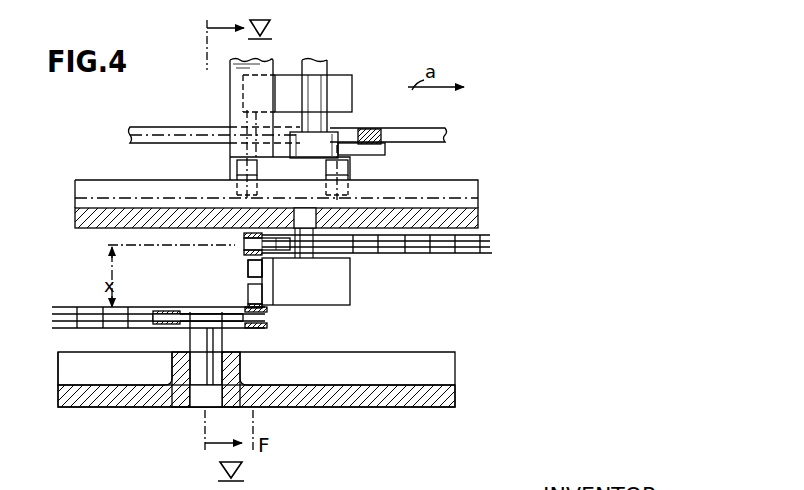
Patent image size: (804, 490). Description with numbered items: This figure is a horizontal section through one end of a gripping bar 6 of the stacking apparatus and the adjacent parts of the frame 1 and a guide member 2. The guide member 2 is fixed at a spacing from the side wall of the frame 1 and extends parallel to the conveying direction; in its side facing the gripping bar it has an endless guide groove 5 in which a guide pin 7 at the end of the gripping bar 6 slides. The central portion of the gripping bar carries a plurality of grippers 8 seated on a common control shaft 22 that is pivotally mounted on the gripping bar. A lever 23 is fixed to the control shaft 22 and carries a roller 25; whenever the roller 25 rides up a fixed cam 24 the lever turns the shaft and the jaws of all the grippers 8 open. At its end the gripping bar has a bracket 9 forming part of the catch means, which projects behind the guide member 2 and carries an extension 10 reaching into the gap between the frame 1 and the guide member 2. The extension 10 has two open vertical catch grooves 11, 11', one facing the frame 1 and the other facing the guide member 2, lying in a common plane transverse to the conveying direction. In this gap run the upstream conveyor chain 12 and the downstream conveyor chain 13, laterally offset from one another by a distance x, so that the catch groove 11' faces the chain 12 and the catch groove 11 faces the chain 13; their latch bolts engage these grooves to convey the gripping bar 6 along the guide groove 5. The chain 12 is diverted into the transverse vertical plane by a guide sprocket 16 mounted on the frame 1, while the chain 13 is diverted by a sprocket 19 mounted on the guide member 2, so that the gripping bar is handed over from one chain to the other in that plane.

The frame 1 is at (407, 362).
The guide member 2 is at (463, 221).
The guide groove 5 is at (455, 180).
The gripping bar 6 is at (263, 62).
The guide pin 7 is at (240, 190).
The gripper 8 is at (346, 95).
The bracket 9 is at (223, 143).
The extension 10 is at (322, 293).
The catch groove 11 is at (286, 268).
The catch groove 11' is at (222, 276).
The conveyor chain 12 is at (68, 307).
The conveyor chain 13 is at (478, 254).
The guide sprocket 16 is at (162, 330).
The sprocket 19 is at (350, 262).
The control shaft 22 is at (322, 62).
The lever 23 is at (387, 148).
The fixed cam 24 is at (443, 136).
The roller 25 is at (372, 130).